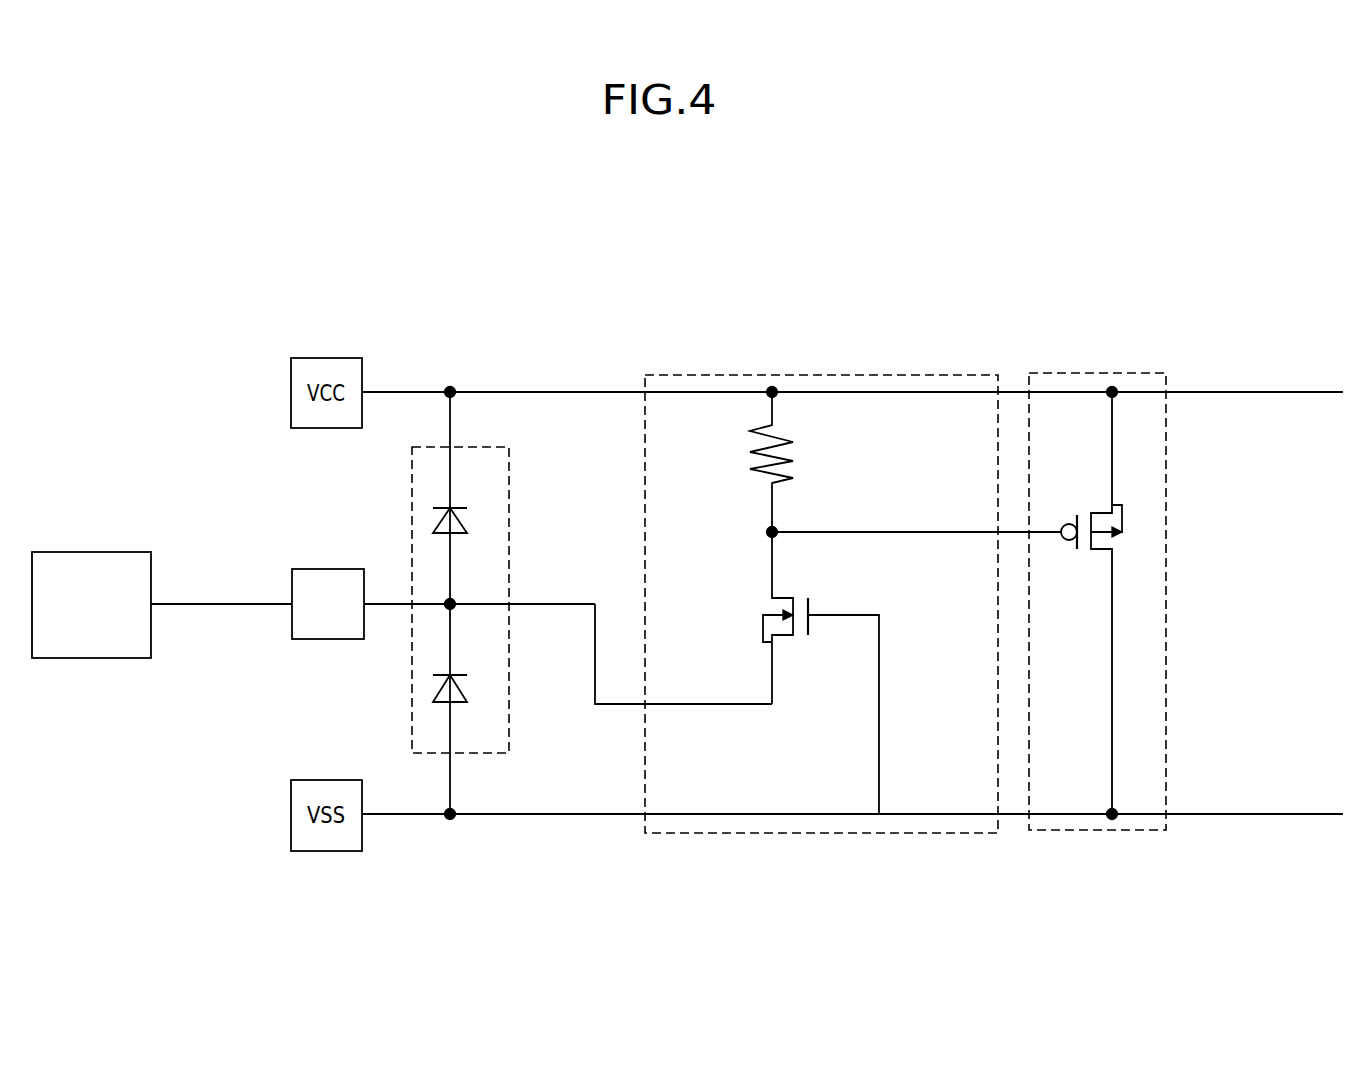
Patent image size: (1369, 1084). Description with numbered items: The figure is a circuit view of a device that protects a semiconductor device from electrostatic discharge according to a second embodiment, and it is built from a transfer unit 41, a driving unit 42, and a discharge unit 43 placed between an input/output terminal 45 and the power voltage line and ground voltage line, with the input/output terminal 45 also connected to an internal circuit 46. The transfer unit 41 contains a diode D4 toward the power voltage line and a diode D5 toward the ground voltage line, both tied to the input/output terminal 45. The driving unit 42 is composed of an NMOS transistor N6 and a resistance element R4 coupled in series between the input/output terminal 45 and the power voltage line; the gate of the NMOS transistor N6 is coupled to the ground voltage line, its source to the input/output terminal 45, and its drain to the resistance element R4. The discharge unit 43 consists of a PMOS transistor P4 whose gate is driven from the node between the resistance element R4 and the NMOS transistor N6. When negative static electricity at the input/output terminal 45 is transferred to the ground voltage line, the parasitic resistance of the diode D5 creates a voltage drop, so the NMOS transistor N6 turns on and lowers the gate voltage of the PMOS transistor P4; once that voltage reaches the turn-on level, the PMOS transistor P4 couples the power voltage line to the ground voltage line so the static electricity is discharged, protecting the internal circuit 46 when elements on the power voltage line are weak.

The transfer unit 41 is at (505, 603).
The driving unit 42 is at (821, 561).
The discharge unit 43 is at (1097, 560).
The input/output terminal 45 is at (328, 569).
The internal circuit 46 is at (98, 552).
The diode D4 is at (460, 535).
The diode D5 is at (460, 705).
The resistance element R4 is at (754, 462).
The NMOS transistor N6 is at (804, 673).
The PMOS transistor P4 is at (1094, 373).